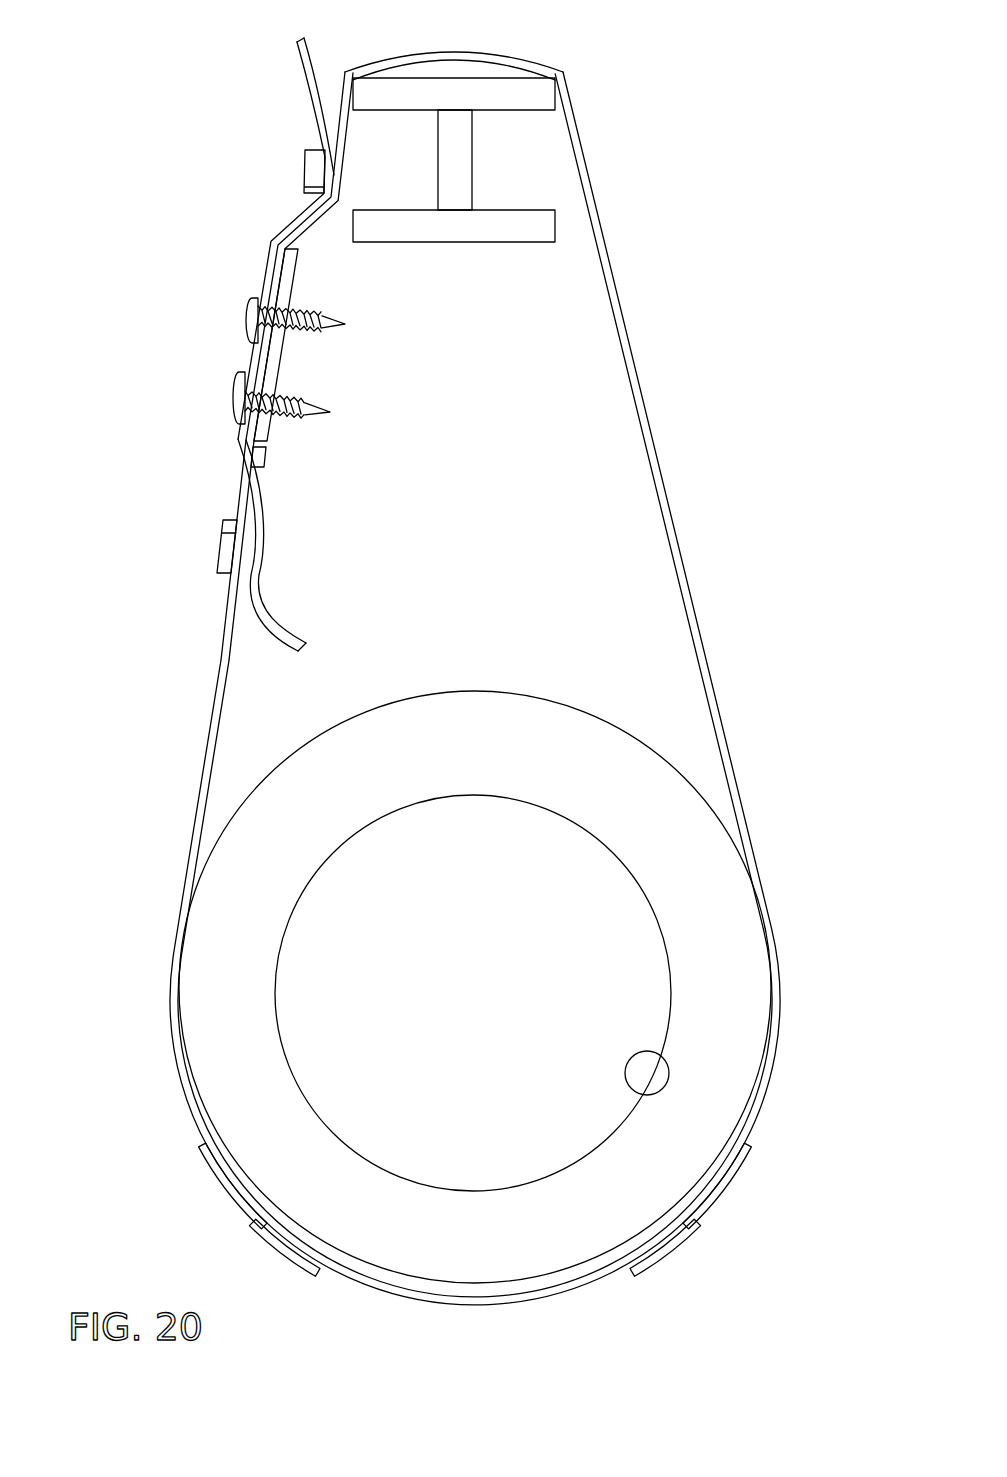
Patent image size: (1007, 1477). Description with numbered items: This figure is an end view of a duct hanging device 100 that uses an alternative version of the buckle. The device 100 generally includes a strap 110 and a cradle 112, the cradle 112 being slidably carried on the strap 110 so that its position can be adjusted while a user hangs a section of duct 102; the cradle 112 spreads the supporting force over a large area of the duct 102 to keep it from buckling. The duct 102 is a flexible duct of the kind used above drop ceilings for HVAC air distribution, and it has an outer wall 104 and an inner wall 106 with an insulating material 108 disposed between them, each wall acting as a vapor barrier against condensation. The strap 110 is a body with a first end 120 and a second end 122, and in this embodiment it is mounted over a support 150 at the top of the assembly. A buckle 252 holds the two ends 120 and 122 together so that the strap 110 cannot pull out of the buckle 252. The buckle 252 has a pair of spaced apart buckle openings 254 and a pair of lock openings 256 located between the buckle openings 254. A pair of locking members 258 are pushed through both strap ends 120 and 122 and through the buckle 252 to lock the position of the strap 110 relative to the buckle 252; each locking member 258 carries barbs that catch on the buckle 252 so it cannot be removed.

The device 100 is at (696, 1262).
The duct 102 is at (668, 815).
The outer wall 104 is at (640, 740).
The inner wall 106 is at (687, 1097).
The insulating material 108 is at (700, 962).
The strap 110 is at (312, 128).
The cradle 112 is at (735, 1181).
The first end 120 is at (305, 46).
The second end 122 is at (297, 642).
The support 150 is at (477, 180).
The buckle 252 is at (273, 355).
The buckle openings 254 is at (297, 248).
The lock openings 256 is at (284, 302).
The locking members 258 is at (247, 312).